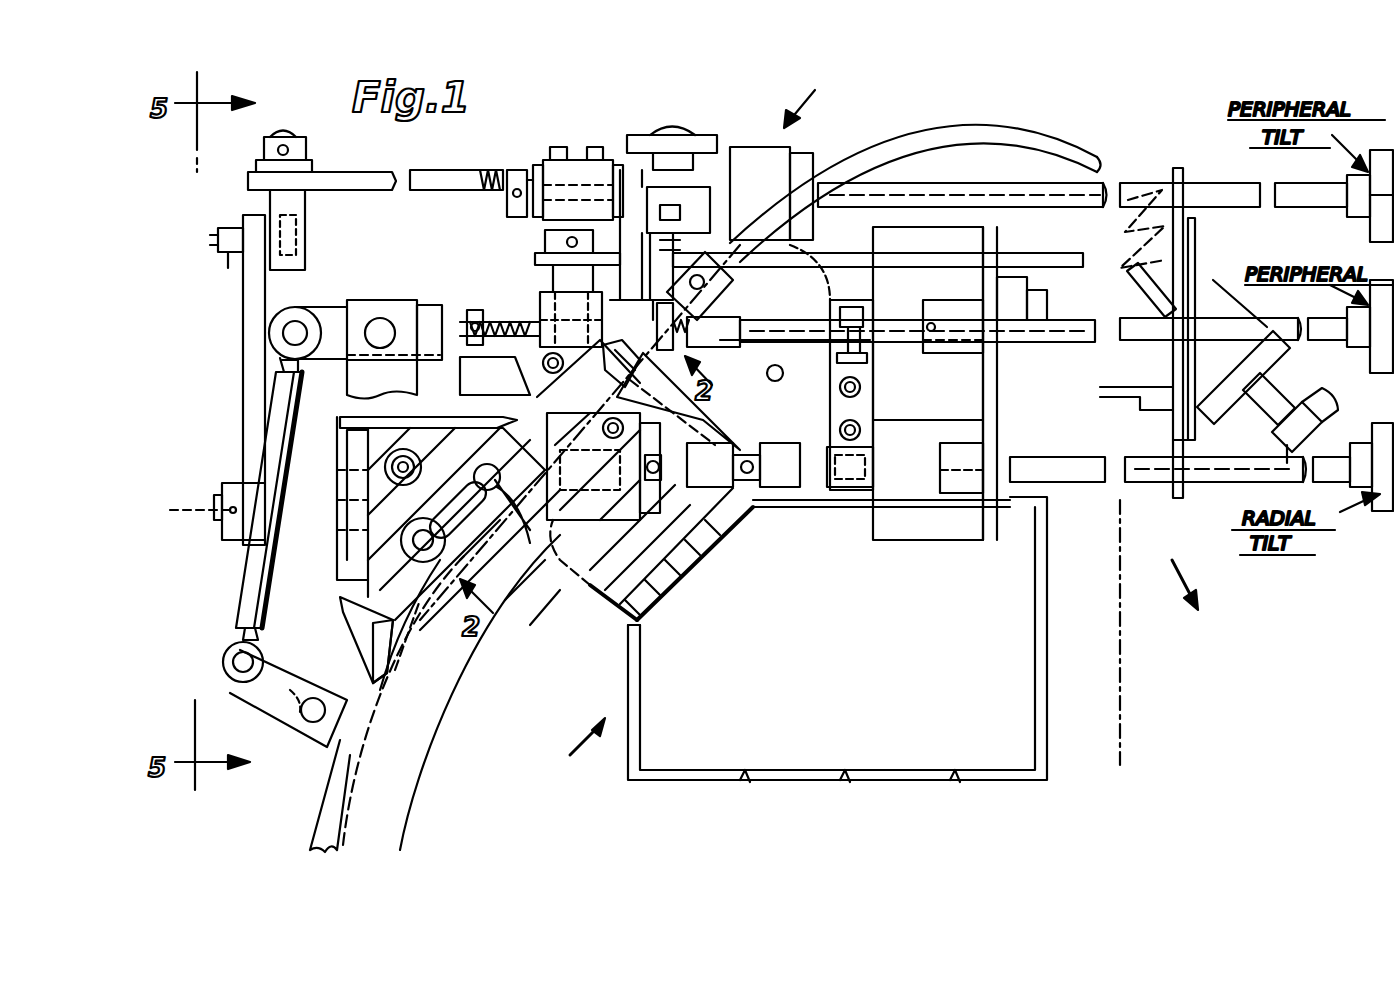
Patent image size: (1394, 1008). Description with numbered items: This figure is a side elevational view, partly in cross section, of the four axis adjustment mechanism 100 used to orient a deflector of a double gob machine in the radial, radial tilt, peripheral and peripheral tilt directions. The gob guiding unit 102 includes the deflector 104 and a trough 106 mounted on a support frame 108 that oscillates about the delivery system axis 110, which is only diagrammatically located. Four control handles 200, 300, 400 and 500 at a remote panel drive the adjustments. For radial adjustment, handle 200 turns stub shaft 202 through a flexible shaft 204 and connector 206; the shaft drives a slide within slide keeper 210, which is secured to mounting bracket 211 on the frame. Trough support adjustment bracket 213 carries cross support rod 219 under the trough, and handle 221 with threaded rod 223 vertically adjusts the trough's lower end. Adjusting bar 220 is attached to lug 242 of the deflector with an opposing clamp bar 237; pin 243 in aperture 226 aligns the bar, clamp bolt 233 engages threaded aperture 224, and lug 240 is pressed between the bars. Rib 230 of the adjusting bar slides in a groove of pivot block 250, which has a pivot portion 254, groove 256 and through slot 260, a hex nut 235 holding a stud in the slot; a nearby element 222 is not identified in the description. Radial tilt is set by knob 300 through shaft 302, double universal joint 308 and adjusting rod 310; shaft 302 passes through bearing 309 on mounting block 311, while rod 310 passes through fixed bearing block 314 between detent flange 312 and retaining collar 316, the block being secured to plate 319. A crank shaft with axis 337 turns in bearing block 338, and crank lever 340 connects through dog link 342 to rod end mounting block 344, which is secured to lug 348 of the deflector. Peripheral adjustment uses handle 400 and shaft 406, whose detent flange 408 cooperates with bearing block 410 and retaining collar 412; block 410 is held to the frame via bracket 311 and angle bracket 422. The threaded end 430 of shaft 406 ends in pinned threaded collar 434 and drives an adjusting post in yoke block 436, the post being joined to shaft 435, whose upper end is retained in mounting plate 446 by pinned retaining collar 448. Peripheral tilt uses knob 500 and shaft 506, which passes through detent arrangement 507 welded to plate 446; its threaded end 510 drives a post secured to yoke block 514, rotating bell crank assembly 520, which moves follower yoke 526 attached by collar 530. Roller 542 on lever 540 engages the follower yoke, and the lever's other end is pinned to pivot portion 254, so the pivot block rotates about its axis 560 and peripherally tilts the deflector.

The four axis adjustment mechanism 100 is at (1212, 605).
The gob guiding unit 102 is at (567, 754).
The deflector 104 is at (385, 835).
The trough 106 is at (840, 295).
The support frame 108 is at (1035, 688).
The gob guiding unit axis 110 is at (1125, 712).
The control handle 200 is at (1330, 405).
The stub shaft 202 is at (860, 330).
The flexible shaft 204 is at (1035, 150).
The connector 206 is at (825, 278).
The slide keeper 210 is at (630, 385).
The mounting bracket 211 is at (558, 614).
The trough support adjustment bracket 213 is at (690, 205).
The cross support rod 219 is at (783, 377).
The adjusting bar 220 is at (370, 560).
The handle 221 is at (690, 98).
The nut 222 is at (385, 468).
The threaded rod 223 is at (730, 260).
The threaded aperture 224 is at (410, 555).
The aperture 226 is at (531, 506).
The rib 230 is at (525, 395).
The clamp bolt 233 is at (410, 630).
The hex nut 235 is at (390, 515).
The clamp bar 237 is at (385, 620).
The lug 240 is at (385, 640).
The lug 242 is at (492, 548).
The pin 243 is at (525, 600).
The pivot block 250 is at (340, 445).
The pivot portion 254 is at (222, 505).
The groove 256 is at (372, 548).
The through slot 260 is at (470, 415).
The control knob 300 is at (1378, 510).
The shaft 302 is at (1085, 450).
The double universal joint 308 is at (845, 488).
The bearing 309 is at (962, 490).
The adjusting rod 310 is at (690, 560).
The mounting block 311 is at (930, 442).
The detent flange 312 is at (660, 590).
The fixed bearing block 314 is at (600, 610).
The retaining collar 316 is at (598, 430).
The plate 319 is at (468, 410).
The axis 337 is at (382, 318).
The bearing block 338 is at (394, 349).
The crank lever 340 is at (322, 305).
The dog link 342 is at (248, 577).
The rod end mounting block 344 is at (272, 700).
The lug 348 is at (335, 738).
The control handle 400 is at (1372, 360).
The shaft 406 is at (1085, 340).
The detent flange 408 is at (1040, 305).
The bearing block 410 is at (965, 355).
The retaining collar 412 is at (935, 348).
The angle bracket 422 is at (840, 412).
The threaded end 430 is at (455, 325).
The pinned threaded collar 434 is at (465, 312).
The shaft 435 is at (548, 235).
The yoke block 436 is at (542, 305).
The mounting plate 446 is at (850, 262).
The pinned retaining collar 448 is at (540, 262).
The control knob 500 is at (1372, 222).
The shaft 506 is at (1030, 170).
The fixed bearing block detent arrangement 507 is at (830, 100).
The threaded end 510 is at (503, 175).
The yoke block 514 is at (612, 160).
The bell crank assembly 520 is at (385, 150).
The follower yoke 526 is at (280, 197).
The collar 530 is at (268, 152).
The lever 540 is at (252, 283).
The roller 542 is at (296, 232).
The axis 560 is at (215, 520).